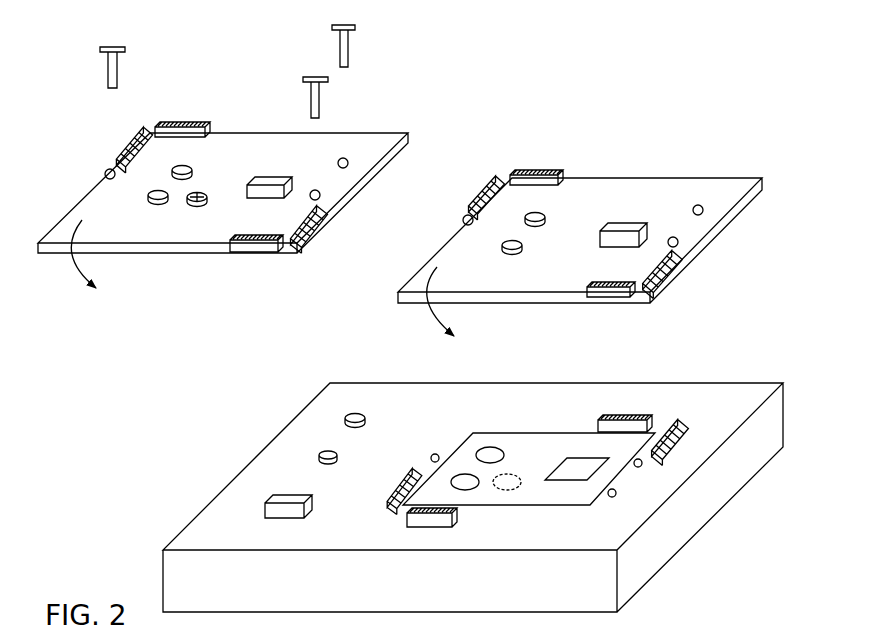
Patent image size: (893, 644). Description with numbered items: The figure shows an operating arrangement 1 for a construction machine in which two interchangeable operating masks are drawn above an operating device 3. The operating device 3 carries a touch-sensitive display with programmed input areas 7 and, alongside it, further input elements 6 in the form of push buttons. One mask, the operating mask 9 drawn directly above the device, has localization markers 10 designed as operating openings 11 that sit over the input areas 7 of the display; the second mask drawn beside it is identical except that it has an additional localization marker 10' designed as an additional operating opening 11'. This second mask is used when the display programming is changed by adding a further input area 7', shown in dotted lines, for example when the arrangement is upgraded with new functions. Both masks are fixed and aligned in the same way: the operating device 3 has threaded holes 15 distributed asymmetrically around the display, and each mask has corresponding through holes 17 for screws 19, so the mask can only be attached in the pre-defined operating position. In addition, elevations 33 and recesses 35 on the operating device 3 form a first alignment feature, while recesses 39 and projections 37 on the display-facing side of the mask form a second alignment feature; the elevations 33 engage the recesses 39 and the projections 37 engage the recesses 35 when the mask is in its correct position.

The operating arrangement 1 is at (180, 406).
The operating device 3 is at (681, 589).
The input elements 6 is at (368, 416).
The input area 7 is at (524, 441).
The further input area 7' is at (507, 441).
The operating mask 9 is at (344, 228).
The localization markers 10 is at (385, 193).
The localization marker 10' is at (220, 258).
The operating openings 11 is at (391, 177).
The additional operating opening 11' is at (197, 226).
The threaded holes 15 is at (431, 456).
The through holes 17 is at (105, 173).
The screws 19 is at (116, 72).
The elevations 33 is at (622, 415).
The recesses 35 is at (392, 481).
The projections 37 is at (128, 144).
The recesses 39 is at (251, 253).